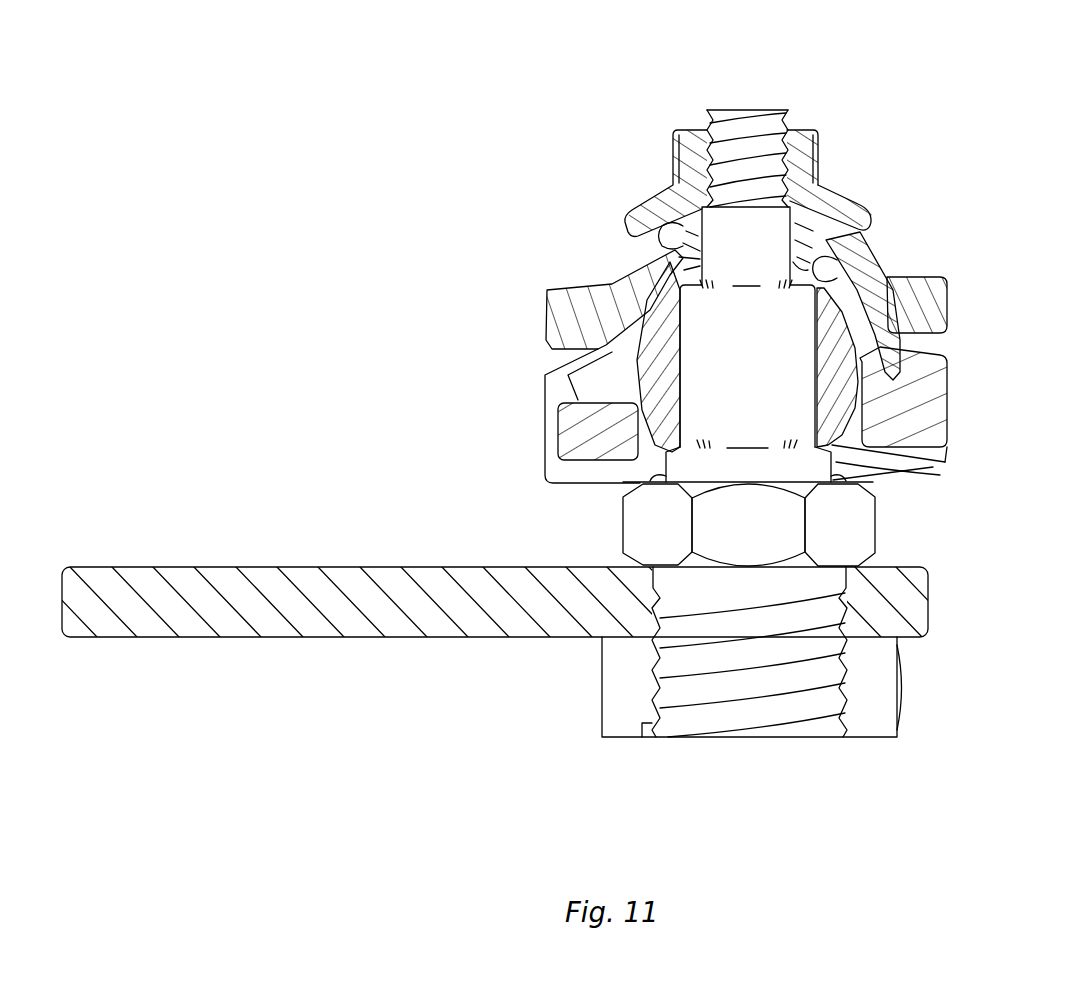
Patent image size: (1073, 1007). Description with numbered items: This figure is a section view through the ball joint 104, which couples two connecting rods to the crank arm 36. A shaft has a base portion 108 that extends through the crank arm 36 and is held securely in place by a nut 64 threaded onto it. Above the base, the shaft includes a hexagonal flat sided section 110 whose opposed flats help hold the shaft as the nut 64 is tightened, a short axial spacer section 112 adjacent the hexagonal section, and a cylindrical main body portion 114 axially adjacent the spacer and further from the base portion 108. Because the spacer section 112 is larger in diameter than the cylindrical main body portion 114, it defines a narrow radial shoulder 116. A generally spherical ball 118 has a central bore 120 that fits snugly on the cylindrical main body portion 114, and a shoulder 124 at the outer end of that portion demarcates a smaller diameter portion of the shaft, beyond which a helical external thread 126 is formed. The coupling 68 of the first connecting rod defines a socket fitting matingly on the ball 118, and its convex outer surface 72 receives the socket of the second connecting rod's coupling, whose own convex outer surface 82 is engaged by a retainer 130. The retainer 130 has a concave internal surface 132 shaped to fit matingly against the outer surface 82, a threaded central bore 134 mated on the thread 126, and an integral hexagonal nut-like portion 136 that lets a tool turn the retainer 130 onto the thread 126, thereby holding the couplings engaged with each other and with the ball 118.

The crank arm 36 is at (472, 625).
The nut 64 is at (903, 690).
The coupling 68 is at (947, 410).
The outer surface 72 is at (905, 325).
The convex outer surface 82 is at (815, 262).
The ball joint 104 is at (452, 345).
The base portion 108 is at (788, 715).
The hexagonal flat sided section 110 is at (875, 520).
The spacer section 112 is at (838, 462).
The cylindrical main body portion 114 is at (822, 375).
The radial shoulder 116 is at (863, 470).
The ball 118 is at (834, 445).
The central bore 120 is at (815, 393).
The shoulder 124 is at (680, 272).
The helical external thread 126 is at (787, 123).
The retainer 130 is at (872, 226).
The concave internal surface 132 is at (668, 226).
The threaded central bore 134 is at (768, 157).
The nut-like portion 136 is at (822, 165).